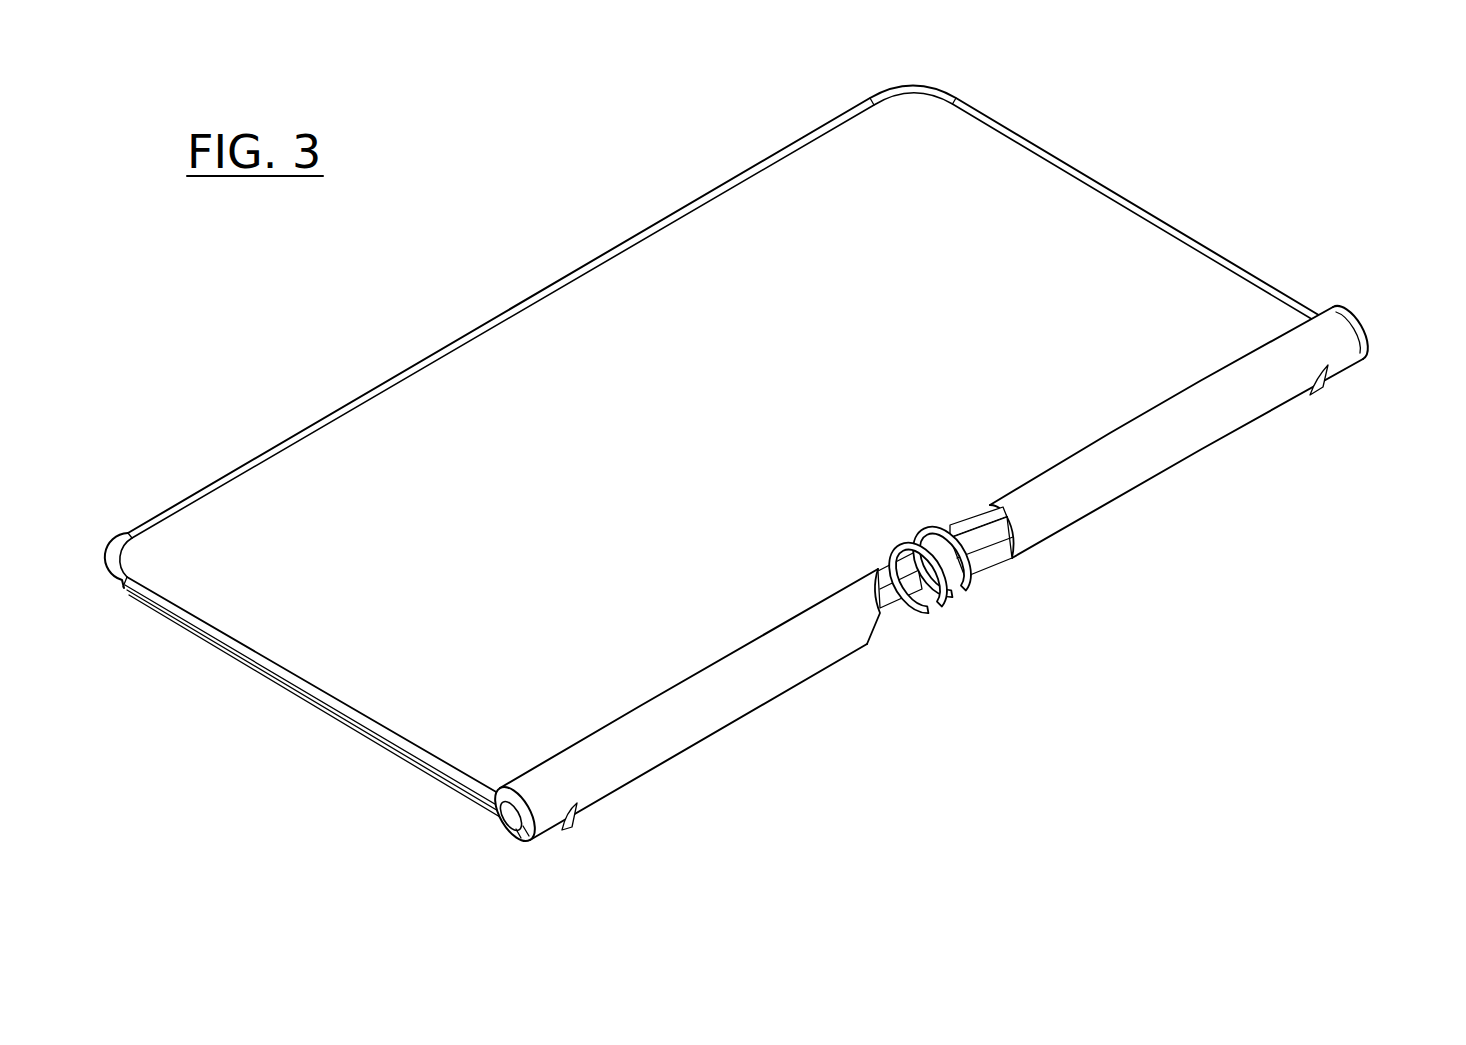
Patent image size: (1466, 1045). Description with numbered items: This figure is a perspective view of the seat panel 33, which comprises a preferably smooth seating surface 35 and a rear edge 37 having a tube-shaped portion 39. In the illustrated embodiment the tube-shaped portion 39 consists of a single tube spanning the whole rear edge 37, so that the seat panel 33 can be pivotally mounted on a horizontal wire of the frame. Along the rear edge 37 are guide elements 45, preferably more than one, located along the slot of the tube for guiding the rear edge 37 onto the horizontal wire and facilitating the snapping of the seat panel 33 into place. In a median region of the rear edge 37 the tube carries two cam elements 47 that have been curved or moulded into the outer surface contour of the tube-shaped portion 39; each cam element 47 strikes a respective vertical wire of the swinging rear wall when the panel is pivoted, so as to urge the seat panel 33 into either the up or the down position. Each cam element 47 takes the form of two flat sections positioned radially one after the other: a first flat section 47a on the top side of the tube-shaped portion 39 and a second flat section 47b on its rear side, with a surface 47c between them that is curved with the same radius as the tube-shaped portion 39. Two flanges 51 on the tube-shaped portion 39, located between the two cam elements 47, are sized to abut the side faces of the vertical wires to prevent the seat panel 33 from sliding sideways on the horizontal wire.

The seat panel 33 is at (785, 493).
The seating surface 35 is at (568, 494).
The rear edge 37 is at (1153, 480).
The tube-shaped portion 39 is at (1358, 322).
The guide element 45 is at (1323, 385).
The cam element 47 is at (940, 593).
The first flat section 47a is at (982, 517).
The second flat section 47b is at (998, 560).
The surface 47c is at (893, 597).
The flange 51 is at (962, 600).